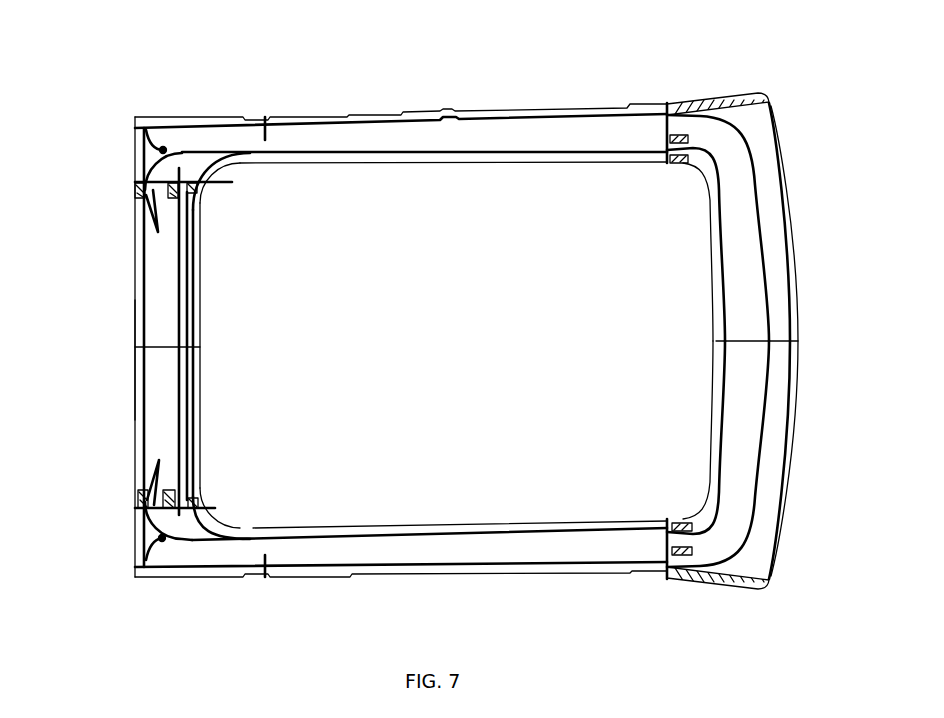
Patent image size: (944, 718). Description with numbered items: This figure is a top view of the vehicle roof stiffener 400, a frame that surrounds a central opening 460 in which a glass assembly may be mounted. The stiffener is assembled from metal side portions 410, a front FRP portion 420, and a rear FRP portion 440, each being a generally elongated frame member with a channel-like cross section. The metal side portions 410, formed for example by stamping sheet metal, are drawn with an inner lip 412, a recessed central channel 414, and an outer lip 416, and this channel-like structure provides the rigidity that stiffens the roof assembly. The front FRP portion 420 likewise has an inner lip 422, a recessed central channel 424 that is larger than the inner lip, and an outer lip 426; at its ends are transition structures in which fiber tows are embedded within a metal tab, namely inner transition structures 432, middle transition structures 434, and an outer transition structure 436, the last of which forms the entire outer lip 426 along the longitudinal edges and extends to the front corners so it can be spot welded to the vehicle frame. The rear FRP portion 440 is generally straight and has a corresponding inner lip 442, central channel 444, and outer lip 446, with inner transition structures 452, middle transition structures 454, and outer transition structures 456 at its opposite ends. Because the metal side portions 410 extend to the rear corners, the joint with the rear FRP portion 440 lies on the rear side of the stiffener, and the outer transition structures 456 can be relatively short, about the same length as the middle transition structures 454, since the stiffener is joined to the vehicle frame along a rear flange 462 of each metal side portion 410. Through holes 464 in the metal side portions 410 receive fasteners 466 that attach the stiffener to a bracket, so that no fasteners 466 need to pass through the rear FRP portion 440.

The vehicle roof stiffener 400 is at (141, 66).
The metal side portion 410 is at (456, 108).
The frame member 412 is at (590, 163).
The frame member 414 is at (407, 145).
The frame flange 416 is at (588, 112).
The front FRP portion 420 is at (806, 294).
The inner lip 422 is at (722, 336).
The recessed central channel 424 is at (738, 386).
The outer lip 426 is at (788, 233).
The inner transition structure 432 is at (683, 167).
The middle transition structure 434 is at (668, 150).
The outer transition structure 436 is at (700, 104).
The rear FRP portion 440 is at (133, 291).
The inner wall 442 is at (198, 397).
The flange 444 is at (168, 334).
The outer wall 446 is at (137, 398).
The inner transition structure 452 is at (174, 184).
The middle transition structure 454 is at (180, 200).
The outer transition structure 456 is at (137, 183).
The central opening 460 is at (471, 351).
The rear flange 462 is at (184, 118).
The through holes 464 is at (160, 147).
The fasteners 466 is at (160, 148).